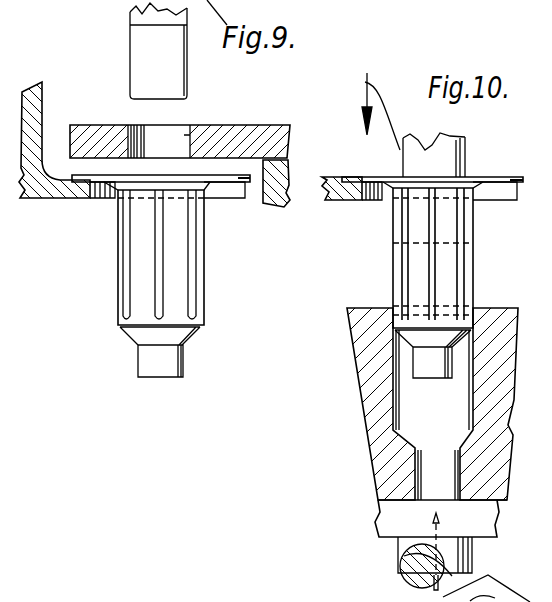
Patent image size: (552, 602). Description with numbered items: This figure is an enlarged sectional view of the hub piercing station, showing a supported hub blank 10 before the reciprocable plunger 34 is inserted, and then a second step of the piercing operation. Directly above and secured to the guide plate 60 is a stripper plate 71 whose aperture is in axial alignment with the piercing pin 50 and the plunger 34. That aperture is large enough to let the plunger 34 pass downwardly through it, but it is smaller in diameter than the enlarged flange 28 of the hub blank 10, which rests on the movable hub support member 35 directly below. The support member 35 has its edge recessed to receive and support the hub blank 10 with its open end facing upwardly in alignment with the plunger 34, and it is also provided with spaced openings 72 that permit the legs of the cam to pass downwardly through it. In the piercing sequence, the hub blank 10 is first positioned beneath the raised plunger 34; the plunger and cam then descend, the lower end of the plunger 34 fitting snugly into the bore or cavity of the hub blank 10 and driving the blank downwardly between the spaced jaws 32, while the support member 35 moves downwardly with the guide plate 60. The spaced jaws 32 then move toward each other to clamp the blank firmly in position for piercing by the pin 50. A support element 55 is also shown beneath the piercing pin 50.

In FIG. 9, the fastener body 10 is at (117, 233).
In FIG. 10, the fastener body 10 is at (393, 250).
In FIG. 9, the flange plate 28 is at (226, 176).
In FIG. 10, the flange plate 28 is at (497, 176).
In FIG. 10, the die block 32 is at (372, 327).
In FIG. 9, the punch 34 is at (130, 45).
In FIG. 10, the punch 34 is at (460, 152).
In FIG. 9, the panel 35 is at (53, 195).
In FIG. 10, the panel 35 is at (350, 200).
In FIG. 10, the drill tool 50 is at (432, 585).
In FIG. 10, the support plate 55 is at (511, 589).
In FIG. 9, the panel section 60 is at (287, 173).
In FIG. 9, the die 71 is at (250, 124).
In FIG. 9, the die opening 72 is at (188, 137).